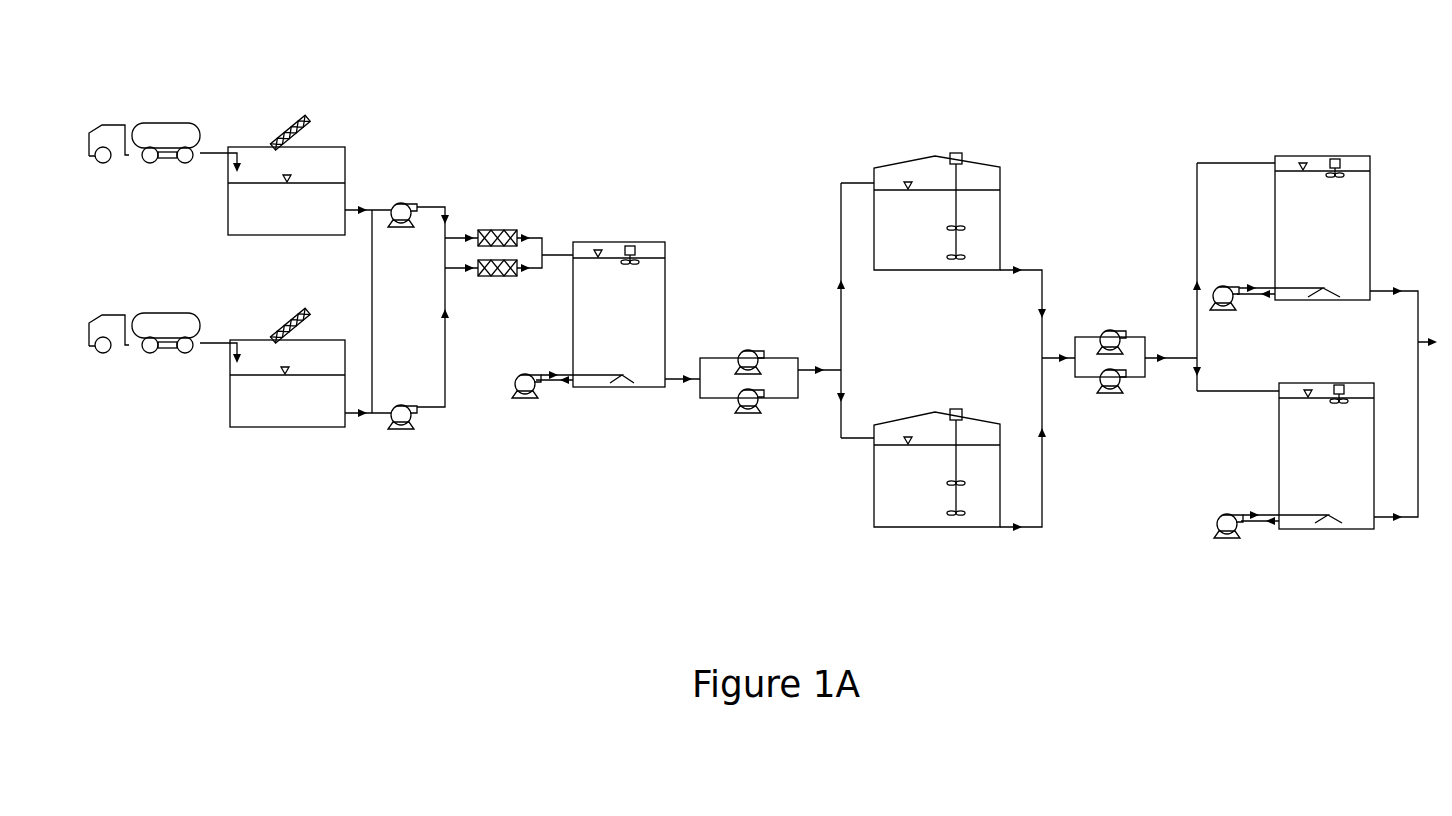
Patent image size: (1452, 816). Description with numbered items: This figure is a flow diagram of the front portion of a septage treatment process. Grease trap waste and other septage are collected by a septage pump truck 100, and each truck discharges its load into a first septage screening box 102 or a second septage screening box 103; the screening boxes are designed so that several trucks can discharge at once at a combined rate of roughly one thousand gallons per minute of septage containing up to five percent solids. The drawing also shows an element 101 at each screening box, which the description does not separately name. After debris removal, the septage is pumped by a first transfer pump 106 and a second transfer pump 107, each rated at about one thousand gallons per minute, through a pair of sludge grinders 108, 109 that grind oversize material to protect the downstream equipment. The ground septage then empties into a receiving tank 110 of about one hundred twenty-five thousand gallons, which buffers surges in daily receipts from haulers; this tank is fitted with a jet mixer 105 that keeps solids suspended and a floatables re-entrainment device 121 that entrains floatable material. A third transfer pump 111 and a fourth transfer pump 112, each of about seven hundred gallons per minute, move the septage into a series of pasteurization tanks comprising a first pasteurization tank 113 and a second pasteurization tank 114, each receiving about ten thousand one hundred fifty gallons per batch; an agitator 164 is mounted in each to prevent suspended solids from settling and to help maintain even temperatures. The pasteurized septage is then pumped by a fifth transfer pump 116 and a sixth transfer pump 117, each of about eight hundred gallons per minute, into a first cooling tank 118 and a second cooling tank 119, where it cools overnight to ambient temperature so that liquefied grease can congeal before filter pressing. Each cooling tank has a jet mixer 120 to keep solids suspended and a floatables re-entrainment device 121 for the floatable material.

The septage pump truck 100 is at (186, 112).
The conveyor 101 is at (288, 128).
The first septage screening box 102 is at (227, 212).
The second septage screening box 103 is at (293, 430).
The jet mixer 105 is at (522, 405).
The first transfer pump 106 is at (408, 193).
The second transfer pump 107 is at (408, 432).
The sludge grinder 108 is at (494, 221).
The sludge grinder 109 is at (494, 284).
The receiving tank 110 is at (668, 270).
The third transfer pump 111 is at (756, 341).
The fourth transfer pump 112 is at (751, 419).
The first pasteurization tank 113 is at (1003, 205).
The second pasteurization tank 114 is at (873, 480).
The fifth transfer pump 116 is at (1114, 321).
The sixth transfer pump 117 is at (1114, 397).
The first cooling tank 118 is at (1373, 220).
The second cooling tank 119 is at (1277, 449).
The jet mixer 120 is at (1223, 280).
The floatables re-entrainment device 121 is at (633, 243).
The agitator 164 is at (960, 246).